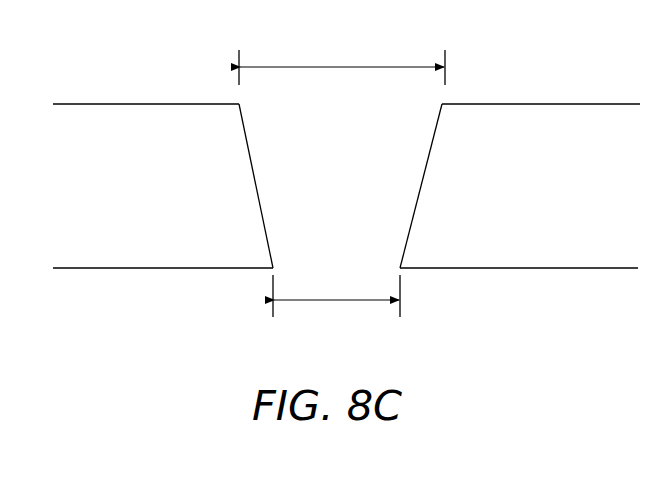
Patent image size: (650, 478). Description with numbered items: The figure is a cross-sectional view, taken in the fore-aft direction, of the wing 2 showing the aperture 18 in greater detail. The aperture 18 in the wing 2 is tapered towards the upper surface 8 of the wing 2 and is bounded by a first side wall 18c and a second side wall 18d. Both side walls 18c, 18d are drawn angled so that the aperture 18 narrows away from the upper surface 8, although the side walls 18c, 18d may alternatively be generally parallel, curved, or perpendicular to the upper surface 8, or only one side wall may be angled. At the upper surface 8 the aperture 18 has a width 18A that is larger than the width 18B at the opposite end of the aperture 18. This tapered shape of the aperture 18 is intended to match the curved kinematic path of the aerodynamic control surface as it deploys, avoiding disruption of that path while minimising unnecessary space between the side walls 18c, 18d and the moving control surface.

The upper surface 8 is at (152, 104).
The wing 2 is at (500, 137).
The aperture 18 is at (318, 190).
The first side wall 18c is at (248, 148).
The second side wall 18d is at (422, 172).
The width at the upper surface 18A is at (342, 52).
The width at the opposite end 18B is at (336, 289).